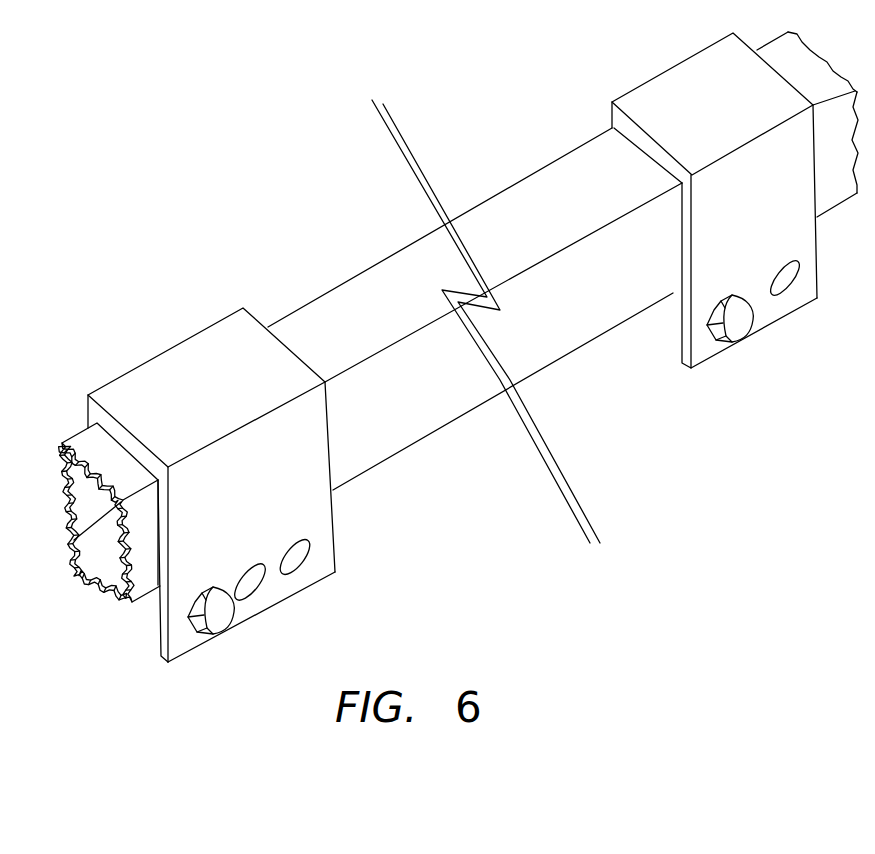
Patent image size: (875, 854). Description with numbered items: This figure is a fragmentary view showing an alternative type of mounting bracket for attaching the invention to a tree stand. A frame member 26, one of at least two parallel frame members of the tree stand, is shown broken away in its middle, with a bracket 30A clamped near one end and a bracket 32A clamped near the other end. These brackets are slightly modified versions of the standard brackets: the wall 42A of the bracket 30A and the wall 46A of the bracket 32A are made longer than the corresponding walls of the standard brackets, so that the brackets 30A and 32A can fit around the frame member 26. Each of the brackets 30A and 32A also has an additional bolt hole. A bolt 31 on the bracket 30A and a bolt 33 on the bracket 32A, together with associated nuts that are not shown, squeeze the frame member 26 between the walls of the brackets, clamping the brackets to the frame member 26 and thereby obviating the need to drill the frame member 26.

The frame member 26 is at (400, 417).
The bracket 30A is at (660, 73).
The bracket 32A is at (243, 308).
The wall 42A is at (683, 368).
The bolt 31 is at (722, 343).
The bolt 33 is at (232, 620).
The wall 46A is at (93, 587).